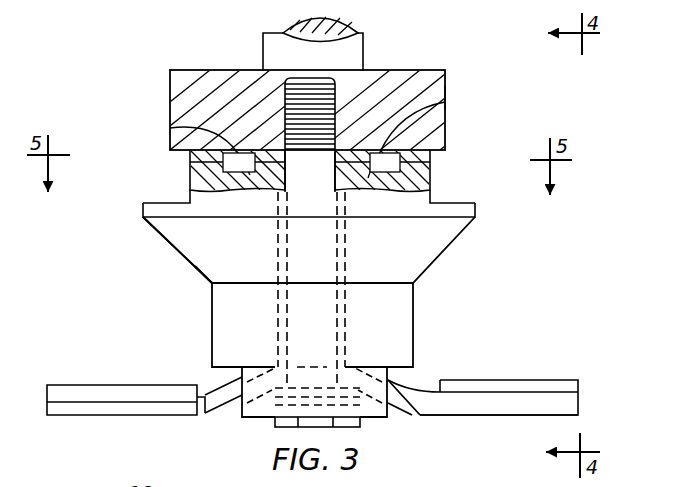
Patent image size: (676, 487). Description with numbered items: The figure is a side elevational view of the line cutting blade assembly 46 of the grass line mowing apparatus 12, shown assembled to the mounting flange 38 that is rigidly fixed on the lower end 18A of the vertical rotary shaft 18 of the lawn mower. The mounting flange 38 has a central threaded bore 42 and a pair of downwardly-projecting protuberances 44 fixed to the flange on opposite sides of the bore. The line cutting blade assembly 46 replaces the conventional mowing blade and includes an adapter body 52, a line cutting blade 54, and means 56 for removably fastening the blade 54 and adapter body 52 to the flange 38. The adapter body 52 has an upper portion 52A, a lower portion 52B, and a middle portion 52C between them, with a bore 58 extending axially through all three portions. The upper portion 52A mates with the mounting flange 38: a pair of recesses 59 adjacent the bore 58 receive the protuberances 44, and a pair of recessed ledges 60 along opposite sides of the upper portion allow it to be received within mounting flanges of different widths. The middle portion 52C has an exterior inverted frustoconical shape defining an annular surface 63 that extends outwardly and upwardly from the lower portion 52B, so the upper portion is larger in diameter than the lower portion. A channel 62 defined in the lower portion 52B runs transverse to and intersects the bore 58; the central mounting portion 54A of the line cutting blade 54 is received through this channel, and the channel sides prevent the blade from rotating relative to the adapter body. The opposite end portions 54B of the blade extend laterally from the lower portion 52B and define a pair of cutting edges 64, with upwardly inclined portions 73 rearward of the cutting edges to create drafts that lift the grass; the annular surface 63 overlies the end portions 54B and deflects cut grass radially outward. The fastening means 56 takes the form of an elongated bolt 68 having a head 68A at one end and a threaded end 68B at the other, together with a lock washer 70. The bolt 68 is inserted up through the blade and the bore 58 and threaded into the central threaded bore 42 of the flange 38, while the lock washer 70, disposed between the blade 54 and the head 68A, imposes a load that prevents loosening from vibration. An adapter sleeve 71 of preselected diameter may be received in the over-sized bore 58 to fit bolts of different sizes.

The grass line mowing apparatus 12 is at (480, 39).
The vertical rotary shaft 18 is at (367, 31).
The lower end of the rotary shaft 18A is at (264, 50).
The central threaded bore 42 is at (325, 78).
The mounting flange 38 is at (170, 98).
The recesses 59 is at (170, 128).
The protuberances 44 is at (190, 163).
The threaded end of the bolt 68B is at (449, 87).
The line cutting blade assembly 46 is at (484, 134).
The recessed ledges 60 is at (457, 205).
The adapter sleeve 71 is at (310, 184).
The upper portion of the adapter body 52A is at (217, 209).
The elongated bolt 68 is at (313, 247).
The bore 58 is at (348, 261).
The annular surface 63 is at (158, 233).
The middle portion of the adapter body 52C is at (194, 266).
The adapter body 52 is at (430, 273).
The channel 62 is at (270, 365).
The central mounting portion 54A is at (359, 368).
The lower portion of the adapter body 52B is at (414, 344).
The upwardly inclined portions 73 is at (152, 393).
The opposite end portions 54B is at (68, 392).
The cutting edges 64 is at (500, 407).
The line cutting blade 54 is at (414, 417).
The lock washer 70 is at (366, 421).
The head of the bolt 68A is at (361, 425).
The fastening means 56 is at (260, 406).